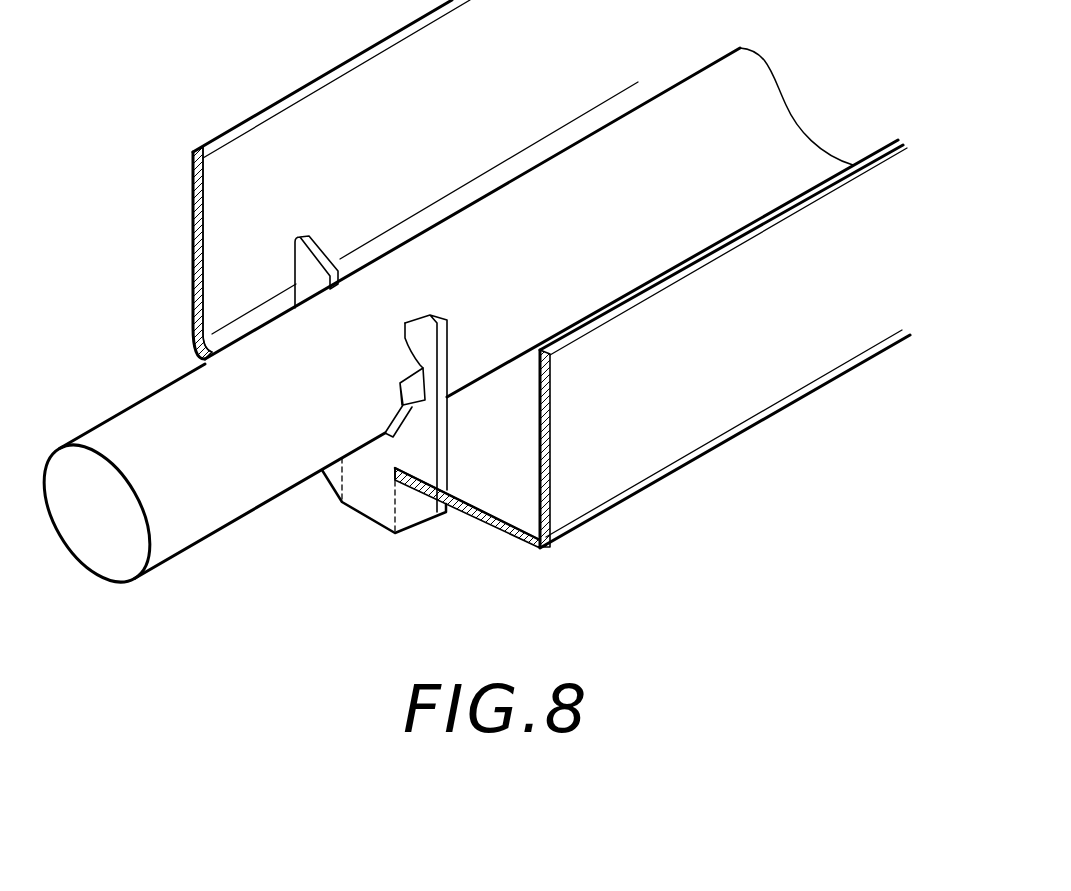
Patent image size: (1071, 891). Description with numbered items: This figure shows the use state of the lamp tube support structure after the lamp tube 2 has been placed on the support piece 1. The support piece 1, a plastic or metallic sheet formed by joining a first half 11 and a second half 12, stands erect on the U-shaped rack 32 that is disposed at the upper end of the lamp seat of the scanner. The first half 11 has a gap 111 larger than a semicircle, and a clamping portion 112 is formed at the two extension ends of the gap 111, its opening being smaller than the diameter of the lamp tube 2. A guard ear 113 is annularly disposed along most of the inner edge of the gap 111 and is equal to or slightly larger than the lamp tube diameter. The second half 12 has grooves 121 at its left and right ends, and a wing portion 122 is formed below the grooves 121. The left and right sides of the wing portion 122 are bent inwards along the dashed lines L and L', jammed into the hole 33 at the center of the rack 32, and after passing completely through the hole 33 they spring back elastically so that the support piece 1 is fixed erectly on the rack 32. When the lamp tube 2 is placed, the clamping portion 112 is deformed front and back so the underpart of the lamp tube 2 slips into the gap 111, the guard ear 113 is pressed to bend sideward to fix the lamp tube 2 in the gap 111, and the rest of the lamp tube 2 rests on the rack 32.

The support piece 1 is at (551, 274).
The lamp tube 2 is at (132, 423).
The first half 11 is at (291, 263).
The second half 12 is at (382, 433).
The U-shaped rack 32 is at (682, 443).
The hole 33 is at (394, 481).
The gap 111 is at (413, 355).
The clamping portion 112 is at (430, 316).
The guard ear 113 is at (413, 418).
The grooves 121 is at (448, 506).
The wing portion 122 is at (323, 472).
The dashed line L is at (316, 517).
The dashed line L' is at (421, 546).